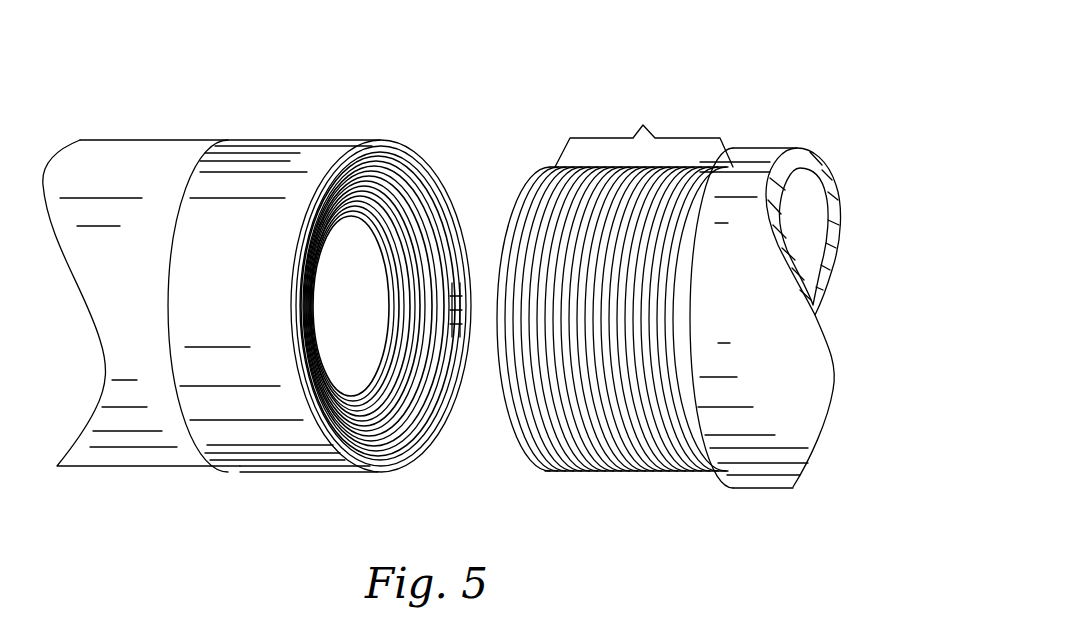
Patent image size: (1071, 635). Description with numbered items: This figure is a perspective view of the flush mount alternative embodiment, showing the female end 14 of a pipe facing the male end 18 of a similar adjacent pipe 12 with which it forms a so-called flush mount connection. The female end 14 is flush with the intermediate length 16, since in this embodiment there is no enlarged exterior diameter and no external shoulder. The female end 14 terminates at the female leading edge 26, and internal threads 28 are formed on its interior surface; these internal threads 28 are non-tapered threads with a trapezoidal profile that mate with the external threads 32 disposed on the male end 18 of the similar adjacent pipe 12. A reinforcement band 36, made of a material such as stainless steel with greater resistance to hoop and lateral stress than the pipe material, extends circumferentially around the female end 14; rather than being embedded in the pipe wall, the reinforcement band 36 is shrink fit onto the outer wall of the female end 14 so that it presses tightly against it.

The similar adjacent pipe 12 is at (703, 95).
The female end 14 is at (283, 340).
The intermediate length 16 is at (135, 137).
The male end 18 is at (590, 472).
The female leading edge 26 is at (443, 182).
The internal threads 28 is at (412, 432).
The external threads 32 is at (644, 133).
The reinforcement band 36 is at (250, 300).